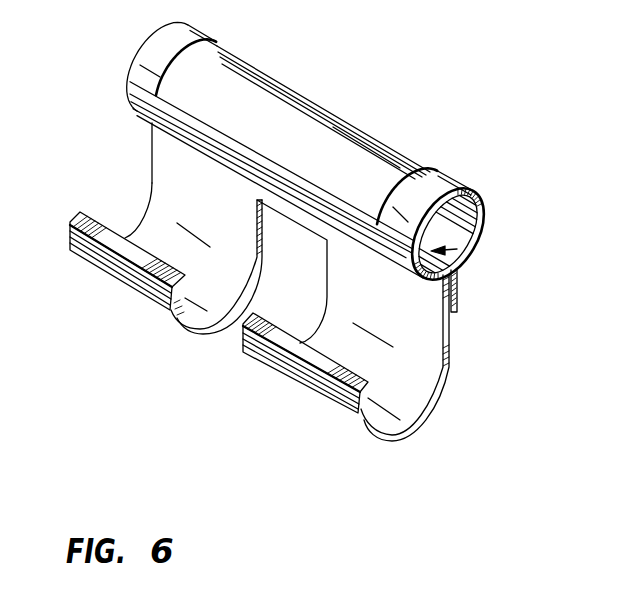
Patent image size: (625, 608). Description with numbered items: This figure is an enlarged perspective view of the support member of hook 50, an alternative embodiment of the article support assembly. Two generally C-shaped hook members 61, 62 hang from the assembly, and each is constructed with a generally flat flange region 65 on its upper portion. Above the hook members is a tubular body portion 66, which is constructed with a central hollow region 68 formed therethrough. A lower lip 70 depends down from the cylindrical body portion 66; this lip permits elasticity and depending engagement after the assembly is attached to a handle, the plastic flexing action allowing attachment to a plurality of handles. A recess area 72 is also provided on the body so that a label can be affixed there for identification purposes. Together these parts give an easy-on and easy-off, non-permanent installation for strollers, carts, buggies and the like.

The hook 50 is at (452, 188).
The C-shaped hook member 61 is at (169, 182).
The C-shaped hook member 62 is at (413, 381).
The flange region 65 is at (124, 246).
The tubular body portion 66 is at (481, 237).
The central hollow region 68 is at (457, 260).
The lower lip 70 is at (458, 305).
The recess area 72 is at (281, 124).